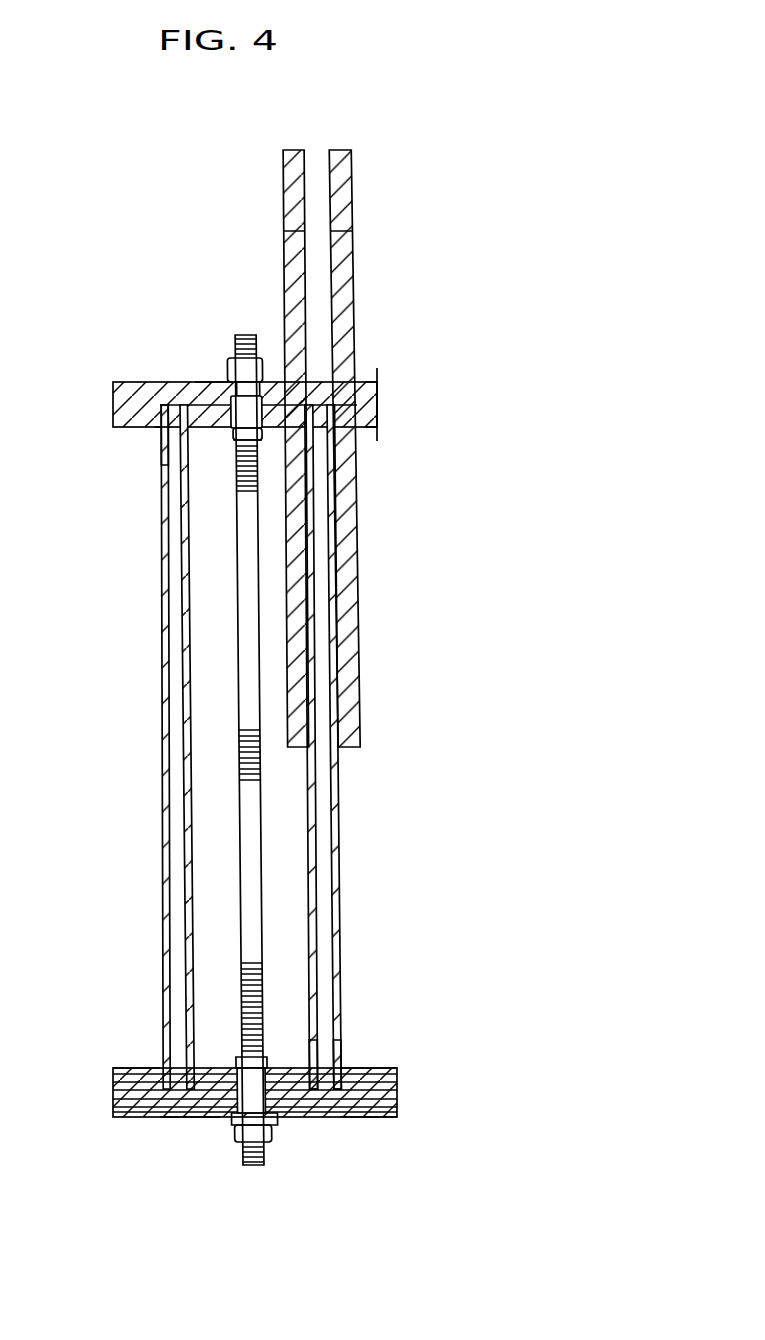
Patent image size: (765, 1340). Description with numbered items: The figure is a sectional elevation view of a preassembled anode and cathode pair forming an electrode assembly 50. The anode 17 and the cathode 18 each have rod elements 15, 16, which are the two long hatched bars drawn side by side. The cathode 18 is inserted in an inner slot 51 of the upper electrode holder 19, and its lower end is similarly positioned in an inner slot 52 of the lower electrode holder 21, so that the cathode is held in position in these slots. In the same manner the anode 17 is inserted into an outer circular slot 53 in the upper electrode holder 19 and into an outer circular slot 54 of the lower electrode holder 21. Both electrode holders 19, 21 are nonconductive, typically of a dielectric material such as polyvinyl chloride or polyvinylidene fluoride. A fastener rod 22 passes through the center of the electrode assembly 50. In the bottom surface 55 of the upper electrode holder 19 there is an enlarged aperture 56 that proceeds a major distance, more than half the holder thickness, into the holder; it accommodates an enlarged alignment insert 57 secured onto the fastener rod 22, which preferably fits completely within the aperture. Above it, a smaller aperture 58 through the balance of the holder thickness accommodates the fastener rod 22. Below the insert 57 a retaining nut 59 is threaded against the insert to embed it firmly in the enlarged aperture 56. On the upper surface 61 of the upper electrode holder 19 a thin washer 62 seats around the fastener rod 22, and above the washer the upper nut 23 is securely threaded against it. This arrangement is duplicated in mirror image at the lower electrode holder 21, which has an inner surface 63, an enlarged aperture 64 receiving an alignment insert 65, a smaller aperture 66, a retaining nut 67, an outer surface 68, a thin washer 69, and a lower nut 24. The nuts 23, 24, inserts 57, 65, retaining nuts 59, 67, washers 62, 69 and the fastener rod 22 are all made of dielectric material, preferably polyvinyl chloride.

The rod element 15 is at (352, 250).
The rod element 16 is at (288, 265).
The anode 17 is at (162, 786).
The cathode 18 is at (185, 868).
The upper electrode holder 19 is at (113, 404).
The lower electrode holder 21 is at (113, 1096).
The fastener rod 22 is at (253, 885).
The upper nut 23 is at (226, 378).
The lower nut 24 is at (274, 1135).
The electrode assembly 50 is at (96, 176).
The inner slot 51 is at (166, 455).
The inner slot 52 is at (335, 1068).
The outer circular slot 53 is at (163, 426).
The outer circular slot 54 is at (352, 1068).
The bottom surface 55 is at (377, 441).
The enlarged aperture 56 is at (232, 400).
The alignment insert 57 is at (260, 432).
The smaller aperture 58 is at (226, 383).
The retaining nut 59 is at (262, 447).
The upper surface 61 is at (378, 368).
The thin washer 62 is at (264, 368).
The inner surface 63 is at (136, 1070).
The enlarged aperture 64 is at (190, 1110).
The alignment insert 65 is at (300, 1062).
The smaller aperture 66 is at (228, 1118).
The retaining nut 67 is at (238, 1075).
The outer surface 68 is at (378, 1115).
The thin washer 69 is at (236, 1128).